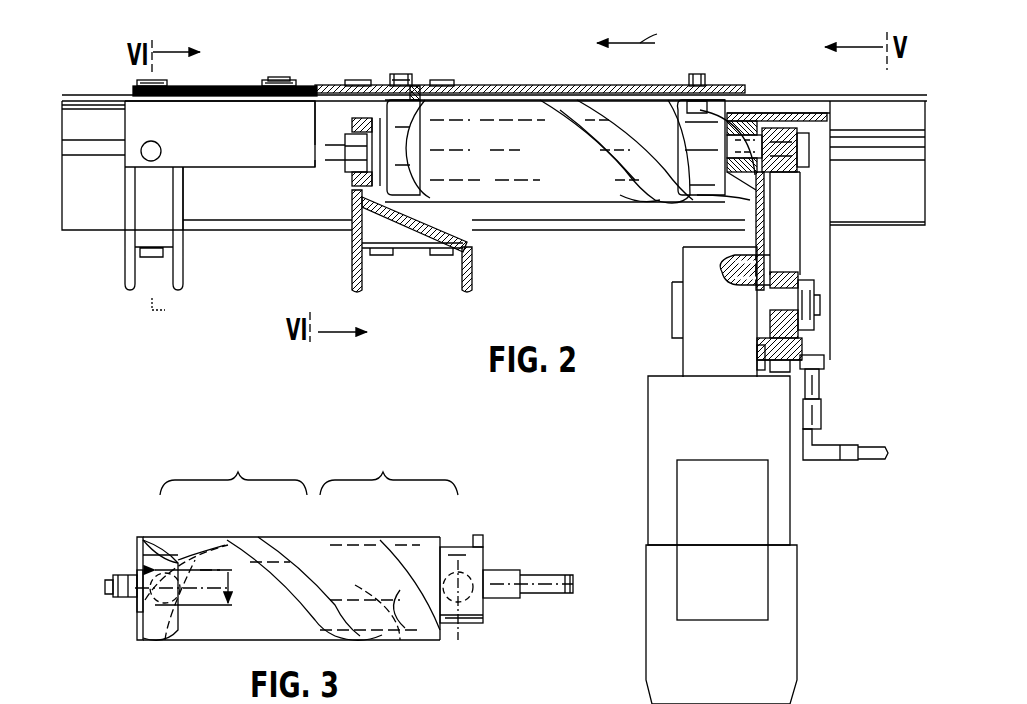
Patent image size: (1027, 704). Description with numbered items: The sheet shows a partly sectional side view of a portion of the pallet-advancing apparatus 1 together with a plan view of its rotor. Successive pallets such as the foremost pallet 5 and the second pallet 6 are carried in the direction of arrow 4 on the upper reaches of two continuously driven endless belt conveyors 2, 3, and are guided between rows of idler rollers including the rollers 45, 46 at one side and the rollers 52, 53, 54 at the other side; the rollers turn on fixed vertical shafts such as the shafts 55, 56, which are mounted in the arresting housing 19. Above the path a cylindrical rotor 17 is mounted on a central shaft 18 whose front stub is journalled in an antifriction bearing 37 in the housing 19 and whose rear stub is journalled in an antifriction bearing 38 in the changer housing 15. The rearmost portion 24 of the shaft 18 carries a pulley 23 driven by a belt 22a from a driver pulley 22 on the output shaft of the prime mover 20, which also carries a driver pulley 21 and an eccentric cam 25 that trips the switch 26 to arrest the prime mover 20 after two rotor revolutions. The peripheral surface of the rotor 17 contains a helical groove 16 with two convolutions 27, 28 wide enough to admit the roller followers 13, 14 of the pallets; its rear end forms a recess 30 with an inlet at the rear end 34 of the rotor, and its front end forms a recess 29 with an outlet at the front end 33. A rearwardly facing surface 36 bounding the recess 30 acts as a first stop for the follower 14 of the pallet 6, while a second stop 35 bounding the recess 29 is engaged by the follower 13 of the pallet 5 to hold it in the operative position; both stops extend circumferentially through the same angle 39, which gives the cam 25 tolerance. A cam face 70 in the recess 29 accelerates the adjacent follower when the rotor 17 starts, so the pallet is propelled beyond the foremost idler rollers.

In FIG. 2, the apparatus 1 is at (88, 196).
In FIG. 2, the endless belt conveyor 2 is at (798, 113).
In FIG. 2, the endless belt conveyor 3 is at (64, 98).
In FIG. 2, the arrow 4 is at (633, 31).
In FIG. 2, the foremost pallet 5 is at (323, 85).
In FIG. 2, the second pallet 6 is at (528, 85).
In FIG. 2, the roller follower 13 is at (417, 86).
In FIG. 3, the roller follower 13 is at (175, 625).
In FIG. 2, the roller follower 14 is at (707, 100).
In FIG. 3, the roller follower 14 is at (458, 610).
In FIG. 2, the changer housing 15 is at (764, 240).
In FIG. 2, the helical groove 16 is at (612, 152).
In FIG. 3, the helical groove 16 is at (262, 552).
In FIG. 2, the cylindrical rotor 17 is at (520, 192).
In FIG. 3, the cylindrical rotor 17 is at (173, 537).
In FIG. 3, the shaft 18 is at (545, 574).
In FIG. 2, the arresting housing 19 is at (352, 284).
In FIG. 2, the prime mover 20 is at (755, 573).
In FIG. 2, the driver pulley 21 is at (768, 292).
In FIG. 2, the driver pulley 22 is at (795, 272).
In FIG. 2, the belt 22a is at (786, 225).
In FIG. 2, the pulley 23 is at (800, 172).
In FIG. 2, the rearmost portion of the shaft 24 is at (782, 113).
In FIG. 2, the eccentric cam 25 is at (810, 340).
In FIG. 2, the switch 26 is at (820, 410).
In FIG. 3, the convolution of the groove 27 is at (233, 466).
In FIG. 3, the first convolution of the groove 28 is at (389, 466).
In FIG. 3, the front recess 29 is at (140, 560).
In FIG. 3, the rear recess 30 is at (460, 547).
In FIG. 3, the front end of the rotor 33 is at (140, 632).
In FIG. 3, the rear end of the rotor 34 is at (483, 545).
In FIG. 3, the front stop 35 is at (135, 612).
In FIG. 3, the rear stop 36 is at (432, 600).
In FIG. 2, the antifriction bearing 37 is at (355, 182).
In FIG. 2, the antifriction bearing 38 is at (700, 197).
In FIG. 3, the angle 39 is at (225, 605).
In FIG. 2, the idler roller 45 is at (133, 87).
In FIG. 2, the idler roller 46 is at (290, 78).
In FIG. 2, the idler roller 52 is at (348, 80).
In FIG. 2, the idler roller 53 is at (386, 78).
In FIG. 2, the idler roller 54 is at (450, 80).
In FIG. 2, the vertical shaft 55 is at (150, 80).
In FIG. 2, the vertical shaft 56 is at (275, 80).
In FIG. 3, the cam face 70 is at (145, 545).